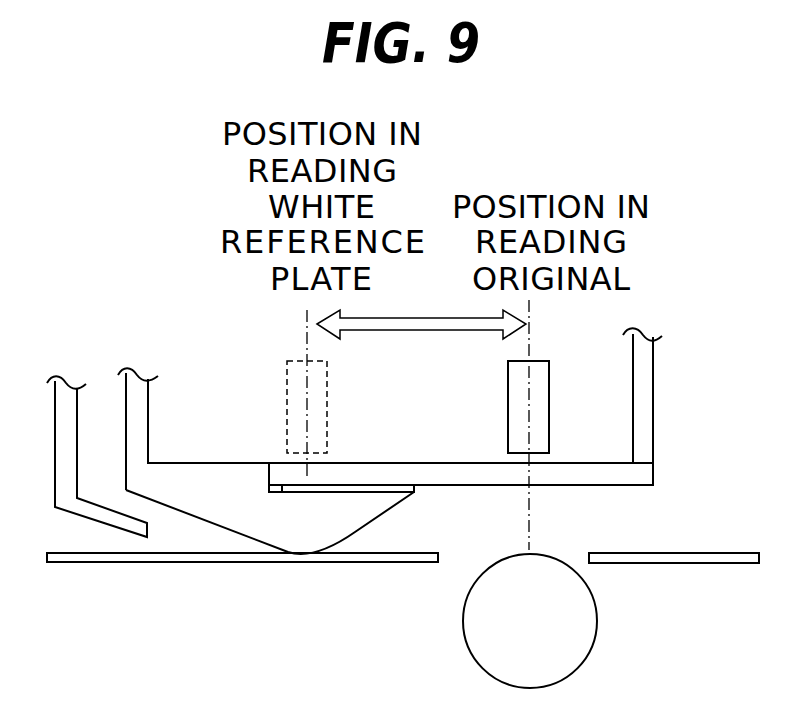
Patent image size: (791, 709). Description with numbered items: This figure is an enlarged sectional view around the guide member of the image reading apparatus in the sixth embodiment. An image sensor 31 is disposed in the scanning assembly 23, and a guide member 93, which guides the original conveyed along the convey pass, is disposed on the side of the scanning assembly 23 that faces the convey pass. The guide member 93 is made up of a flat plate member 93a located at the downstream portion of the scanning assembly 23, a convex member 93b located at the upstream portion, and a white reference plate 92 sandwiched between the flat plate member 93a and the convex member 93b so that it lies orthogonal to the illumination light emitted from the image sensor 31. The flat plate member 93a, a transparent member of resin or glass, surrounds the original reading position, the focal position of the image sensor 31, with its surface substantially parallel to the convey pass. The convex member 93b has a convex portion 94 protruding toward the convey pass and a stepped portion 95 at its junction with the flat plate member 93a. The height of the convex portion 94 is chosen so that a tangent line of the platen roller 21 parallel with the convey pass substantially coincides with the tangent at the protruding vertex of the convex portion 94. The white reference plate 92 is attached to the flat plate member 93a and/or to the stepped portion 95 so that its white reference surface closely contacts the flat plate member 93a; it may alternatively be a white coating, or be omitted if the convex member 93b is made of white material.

The platen roller 21 is at (592, 647).
The scanning assembly 23 is at (655, 410).
The image sensor 31 is at (549, 415).
The white reference plate 92 is at (328, 488).
The guide member 93 is at (603, 487).
The flat plate member 93a is at (456, 487).
The convex member 93b is at (247, 520).
The convex portion 94 is at (307, 540).
The stepped portion 95 is at (347, 489).